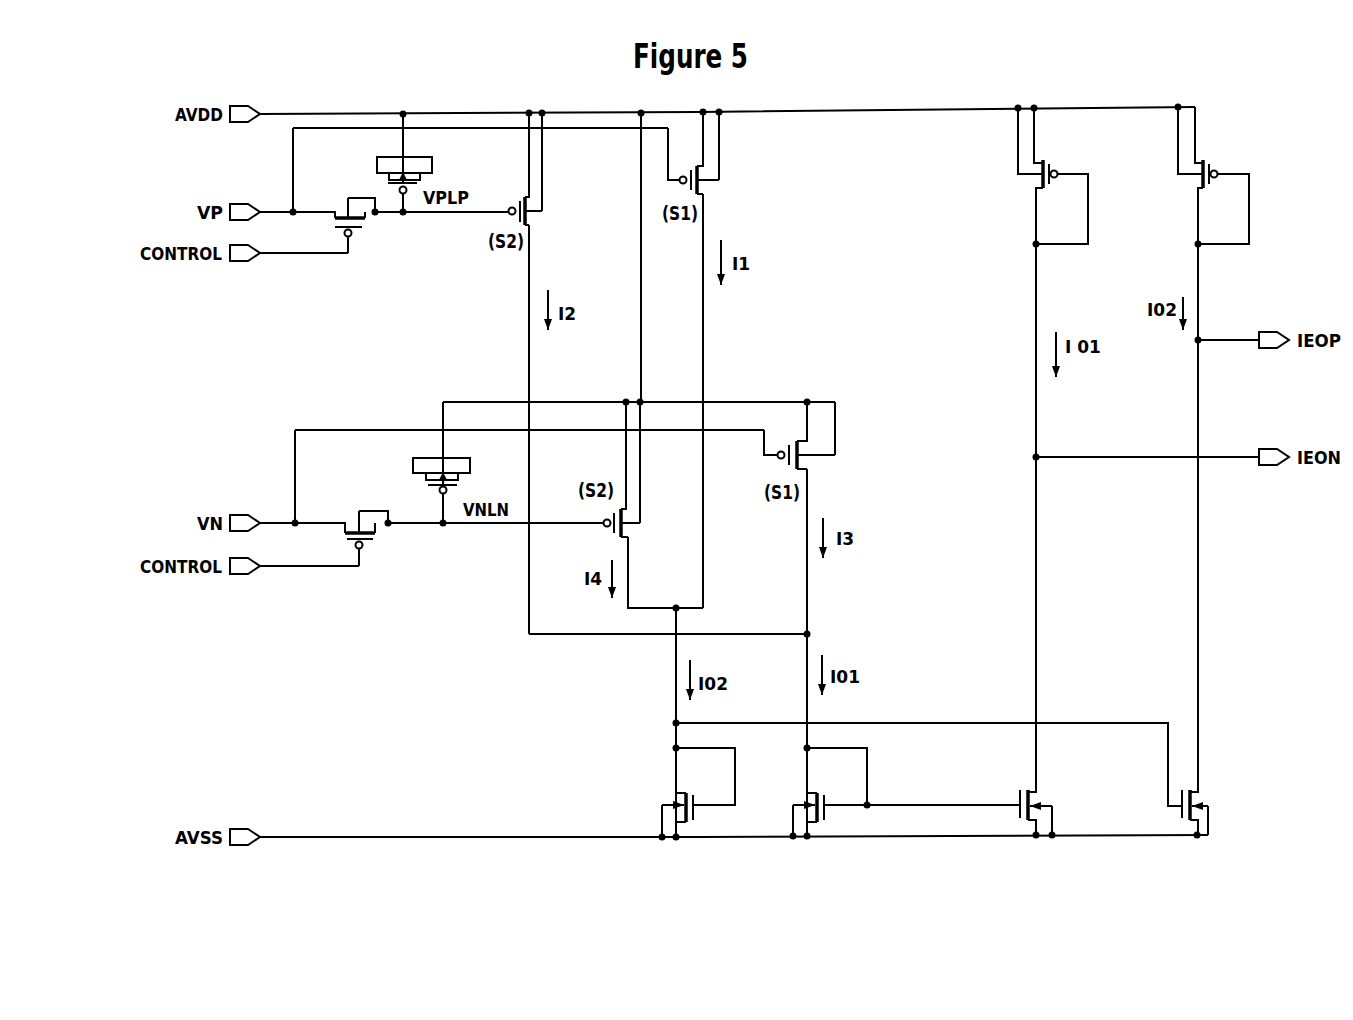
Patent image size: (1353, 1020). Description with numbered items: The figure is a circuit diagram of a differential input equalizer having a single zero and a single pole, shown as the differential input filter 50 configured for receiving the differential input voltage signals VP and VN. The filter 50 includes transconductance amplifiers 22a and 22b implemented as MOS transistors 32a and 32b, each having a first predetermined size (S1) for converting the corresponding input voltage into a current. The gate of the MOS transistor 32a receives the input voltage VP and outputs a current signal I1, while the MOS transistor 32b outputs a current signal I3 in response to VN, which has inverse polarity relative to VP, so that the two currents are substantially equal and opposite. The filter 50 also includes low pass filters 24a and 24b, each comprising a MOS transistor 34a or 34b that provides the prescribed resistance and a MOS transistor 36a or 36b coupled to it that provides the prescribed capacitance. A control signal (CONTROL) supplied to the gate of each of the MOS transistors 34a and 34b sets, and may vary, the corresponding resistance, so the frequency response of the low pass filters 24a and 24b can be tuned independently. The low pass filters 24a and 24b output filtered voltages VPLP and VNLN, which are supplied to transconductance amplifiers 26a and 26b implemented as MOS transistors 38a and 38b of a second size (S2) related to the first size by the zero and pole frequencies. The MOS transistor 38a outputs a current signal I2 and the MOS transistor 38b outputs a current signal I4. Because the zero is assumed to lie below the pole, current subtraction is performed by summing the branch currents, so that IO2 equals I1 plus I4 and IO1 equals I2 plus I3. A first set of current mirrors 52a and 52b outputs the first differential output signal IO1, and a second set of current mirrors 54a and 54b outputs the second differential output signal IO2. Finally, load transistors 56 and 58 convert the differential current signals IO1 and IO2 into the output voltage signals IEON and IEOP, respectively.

The transconductance amplifier 22a is at (733, 156).
The transconductance amplifier 22b is at (830, 382).
The low pass filter 24a is at (450, 233).
The low pass filter 24b is at (450, 562).
The transconductance amplifier 26a is at (558, 190).
The transconductance amplifier 26b is at (648, 512).
The MOS transistor 32a is at (713, 188).
The MOS transistor 32b is at (827, 467).
The MOS transistor 34a is at (368, 240).
The MOS transistor 34b is at (373, 552).
The MOS transistor 36a is at (388, 150).
The MOS transistor 36b is at (425, 450).
The MOS transistor 38a is at (542, 218).
The MOS transistor 38b is at (632, 533).
The differential input filter 50 is at (1080, 65).
The current mirror 52a is at (880, 780).
The current mirror 52b is at (1060, 793).
The current mirror 54a is at (652, 800).
The current mirror 54b is at (1218, 798).
The load transistor 56 is at (1102, 198).
The load transistor 58 is at (1248, 164).